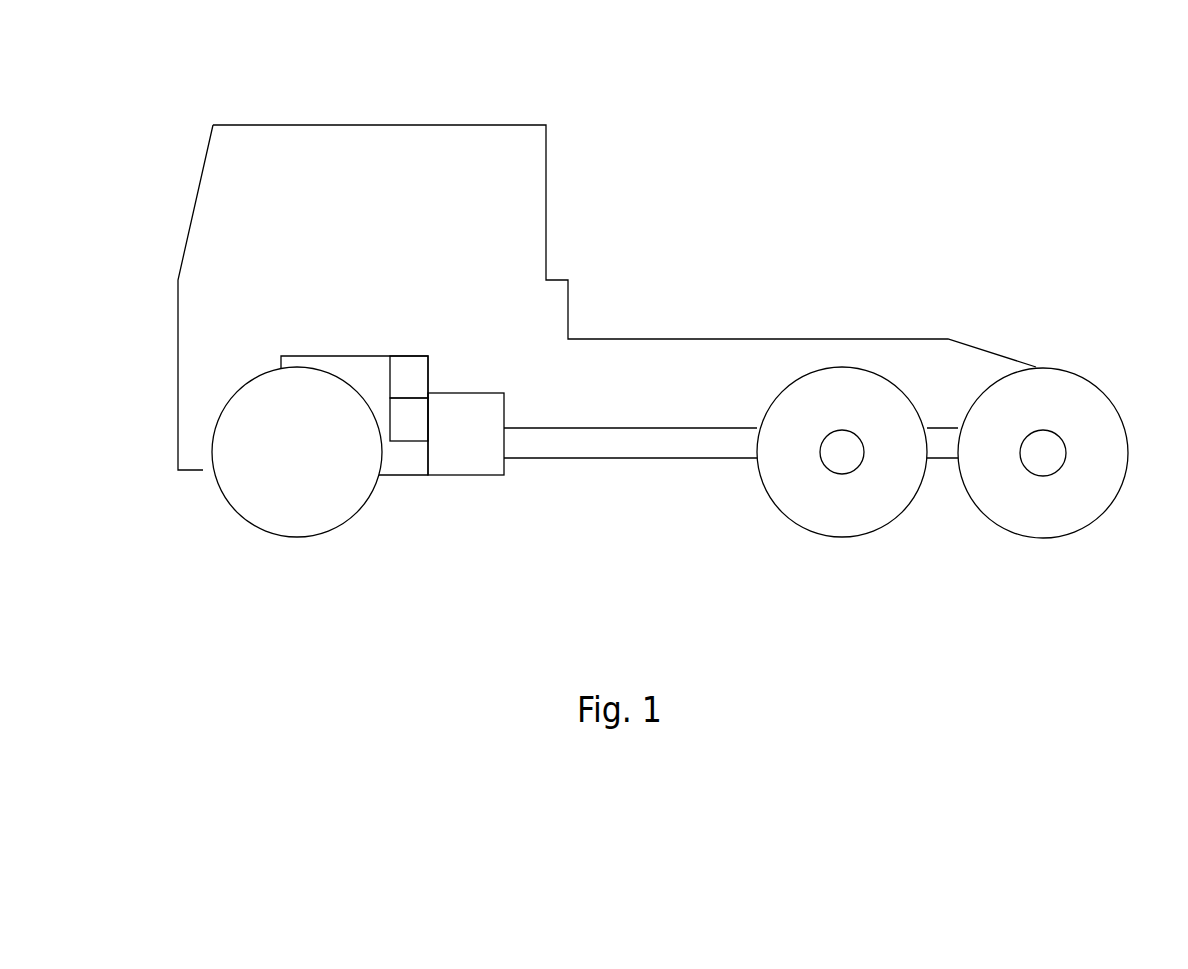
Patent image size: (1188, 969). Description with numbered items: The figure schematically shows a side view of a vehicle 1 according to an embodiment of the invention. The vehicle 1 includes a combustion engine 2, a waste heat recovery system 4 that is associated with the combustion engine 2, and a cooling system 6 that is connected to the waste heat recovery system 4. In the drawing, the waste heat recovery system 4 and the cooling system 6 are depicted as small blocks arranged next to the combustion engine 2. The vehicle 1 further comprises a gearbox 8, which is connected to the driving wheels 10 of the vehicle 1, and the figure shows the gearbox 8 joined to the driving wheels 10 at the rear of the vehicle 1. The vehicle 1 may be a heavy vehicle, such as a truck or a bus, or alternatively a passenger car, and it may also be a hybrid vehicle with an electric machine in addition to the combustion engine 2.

The vehicle 1 is at (658, 100).
The combustion engine 2 is at (325, 355).
The waste heat recovery system 4 is at (407, 355).
The cooling system 6 is at (410, 441).
The gearbox 8 is at (488, 475).
The driving wheels 10 is at (893, 522).